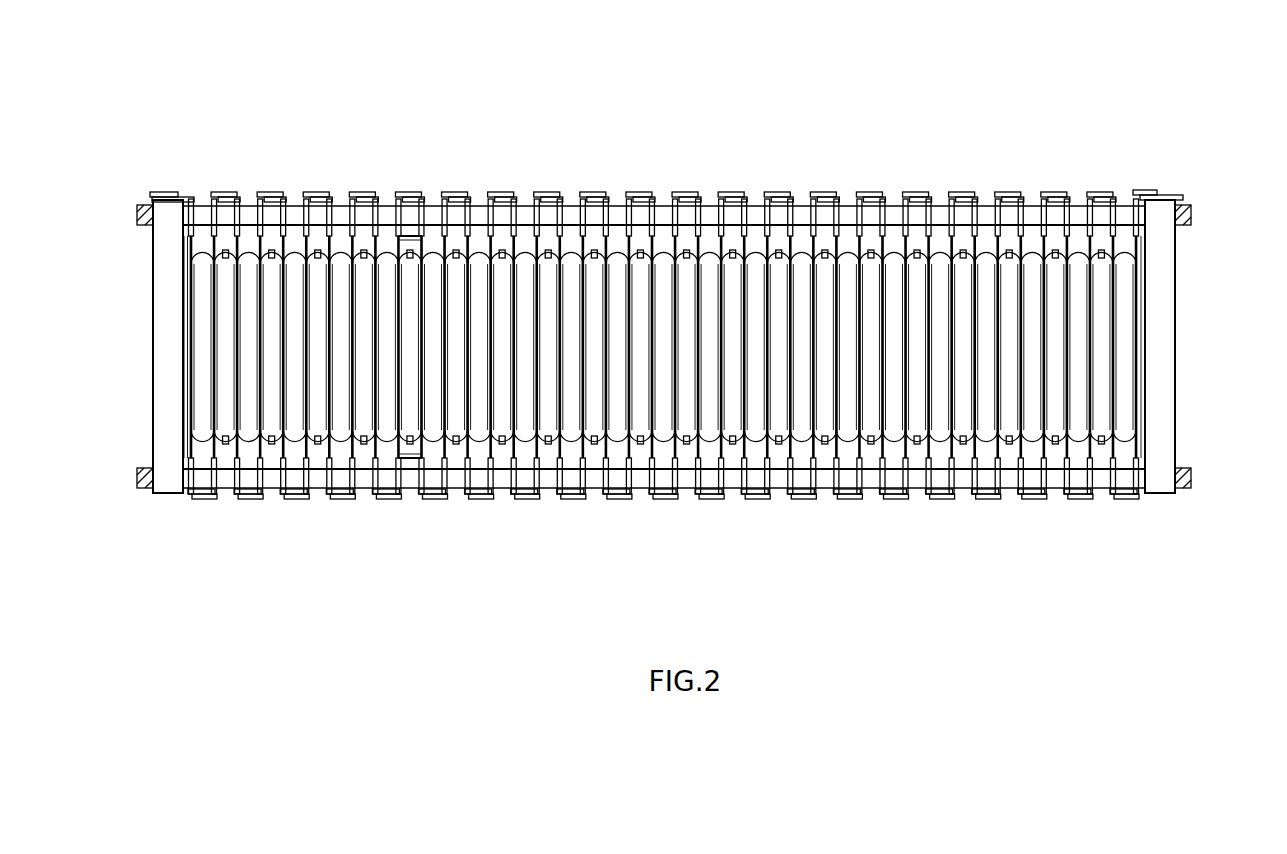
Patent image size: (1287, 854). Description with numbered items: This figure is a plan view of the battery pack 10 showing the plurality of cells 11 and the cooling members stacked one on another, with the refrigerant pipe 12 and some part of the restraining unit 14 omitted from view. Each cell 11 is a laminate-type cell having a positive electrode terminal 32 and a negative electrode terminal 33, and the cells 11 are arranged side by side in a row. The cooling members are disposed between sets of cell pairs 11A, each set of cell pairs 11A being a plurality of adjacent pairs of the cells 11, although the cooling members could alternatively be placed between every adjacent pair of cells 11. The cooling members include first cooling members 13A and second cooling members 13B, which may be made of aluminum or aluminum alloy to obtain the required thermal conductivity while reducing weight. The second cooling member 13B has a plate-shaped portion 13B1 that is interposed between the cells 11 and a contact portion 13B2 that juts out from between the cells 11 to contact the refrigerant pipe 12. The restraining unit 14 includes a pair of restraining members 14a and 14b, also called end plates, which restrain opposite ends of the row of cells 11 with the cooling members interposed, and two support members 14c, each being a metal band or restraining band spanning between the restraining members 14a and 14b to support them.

The battery pack 10 is at (1066, 118).
The cell 11 is at (187, 333).
The cell pair 11A is at (182, 405).
The refrigerant pipe 12 is at (362, 453).
The first cooling member 13A is at (228, 245).
The second cooling member 13B is at (426, 247).
The plate-shaped portion 13B1 is at (410, 272).
The contact portion 13B2 is at (410, 448).
The restraining unit 14 is at (1183, 280).
The restraining member 14a is at (153, 272).
The restraining member 14b is at (1176, 386).
The support member 14c is at (1192, 213).
The positive electrode terminal 32 is at (190, 195).
The negative electrode terminal 33 is at (222, 196).